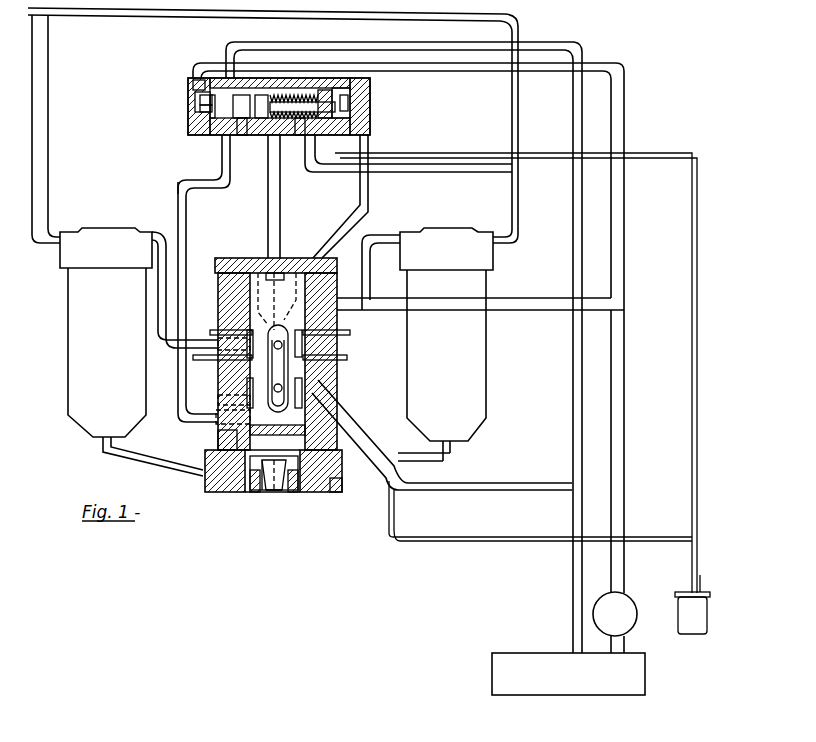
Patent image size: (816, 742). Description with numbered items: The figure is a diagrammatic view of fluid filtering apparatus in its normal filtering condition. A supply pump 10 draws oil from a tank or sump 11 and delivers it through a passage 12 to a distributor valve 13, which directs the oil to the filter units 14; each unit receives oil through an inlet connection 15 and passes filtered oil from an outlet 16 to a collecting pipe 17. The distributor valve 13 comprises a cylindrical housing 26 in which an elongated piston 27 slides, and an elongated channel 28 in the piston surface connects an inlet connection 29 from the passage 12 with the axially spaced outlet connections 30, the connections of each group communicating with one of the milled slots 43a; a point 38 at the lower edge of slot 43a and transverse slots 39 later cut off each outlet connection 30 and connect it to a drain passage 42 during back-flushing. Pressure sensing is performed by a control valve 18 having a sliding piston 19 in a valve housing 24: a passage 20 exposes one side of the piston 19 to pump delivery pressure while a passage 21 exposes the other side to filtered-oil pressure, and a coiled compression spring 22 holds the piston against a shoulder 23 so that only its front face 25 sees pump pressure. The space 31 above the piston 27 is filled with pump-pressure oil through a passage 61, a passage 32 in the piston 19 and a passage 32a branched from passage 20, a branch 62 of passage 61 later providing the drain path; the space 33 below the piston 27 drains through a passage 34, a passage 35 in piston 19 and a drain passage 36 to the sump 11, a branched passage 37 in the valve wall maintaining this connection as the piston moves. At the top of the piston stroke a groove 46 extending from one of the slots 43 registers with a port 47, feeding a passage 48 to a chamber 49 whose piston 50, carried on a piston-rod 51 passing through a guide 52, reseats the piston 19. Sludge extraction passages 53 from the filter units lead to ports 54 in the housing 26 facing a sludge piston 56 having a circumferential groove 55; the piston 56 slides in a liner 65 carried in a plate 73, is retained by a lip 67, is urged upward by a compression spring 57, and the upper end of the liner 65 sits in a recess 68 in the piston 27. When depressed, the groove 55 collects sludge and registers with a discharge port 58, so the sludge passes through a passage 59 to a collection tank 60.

The supply pump 10 is at (624, 623).
The tank or sump 11 is at (577, 683).
The passage 12 is at (626, 480).
The distributor valve 13 is at (247, 343).
The filter units 14 is at (104, 308).
The inlet connection 15 is at (164, 232).
The outlet 16 is at (54, 232).
The collecting pipe 17 is at (101, 17).
The control valve 18 is at (281, 134).
The sliding piston 19 is at (196, 116).
The passage 20 is at (200, 63).
The passage 21 is at (487, 173).
The coiled compression spring 22 is at (296, 137).
The shoulder 23 is at (203, 100).
The valve housing 24 is at (311, 164).
The front face 25 is at (203, 108).
The cylindrical housing 26 is at (220, 292).
The elongated piston 27 is at (216, 416).
The elongated channel 28 is at (250, 395).
The inlet connection 29 is at (338, 280).
The outlet connections 30 is at (252, 331).
The space 31 is at (278, 276).
The passage 32 is at (250, 97).
The passage 32a is at (194, 82).
The space 33 is at (300, 496).
The passage 34 is at (180, 186).
The passage 35 is at (213, 117).
The drain passage 36 is at (238, 46).
The branched passage 37 is at (243, 132).
The point 38 is at (322, 368).
The transverse slots 39 is at (248, 372).
The drain passage 42 is at (362, 452).
The slots 43 is at (320, 400).
The milled slots 43a is at (304, 332).
The groove 46 is at (250, 402).
The port 47 is at (200, 345).
The passage 48 is at (338, 240).
The chamber 49 is at (350, 118).
The piston 50 is at (345, 140).
The piston-rod 51 is at (340, 107).
The guide 52 is at (318, 98).
The sludge extraction passages 53 is at (140, 461).
The ports 54 is at (243, 492).
The circumferential groove 55 is at (264, 495).
The sludge piston 56 is at (296, 492).
The compression spring 57 is at (278, 492).
The discharge port 58 is at (343, 488).
The passage 59 is at (536, 536).
The collection tank 60 is at (692, 636).
The passage 61 is at (281, 220).
The branch 62 is at (232, 170).
The liner 65 is at (250, 488).
The lip 67 is at (230, 488).
The recess 68 is at (410, 430).
The plate 73 is at (269, 505).